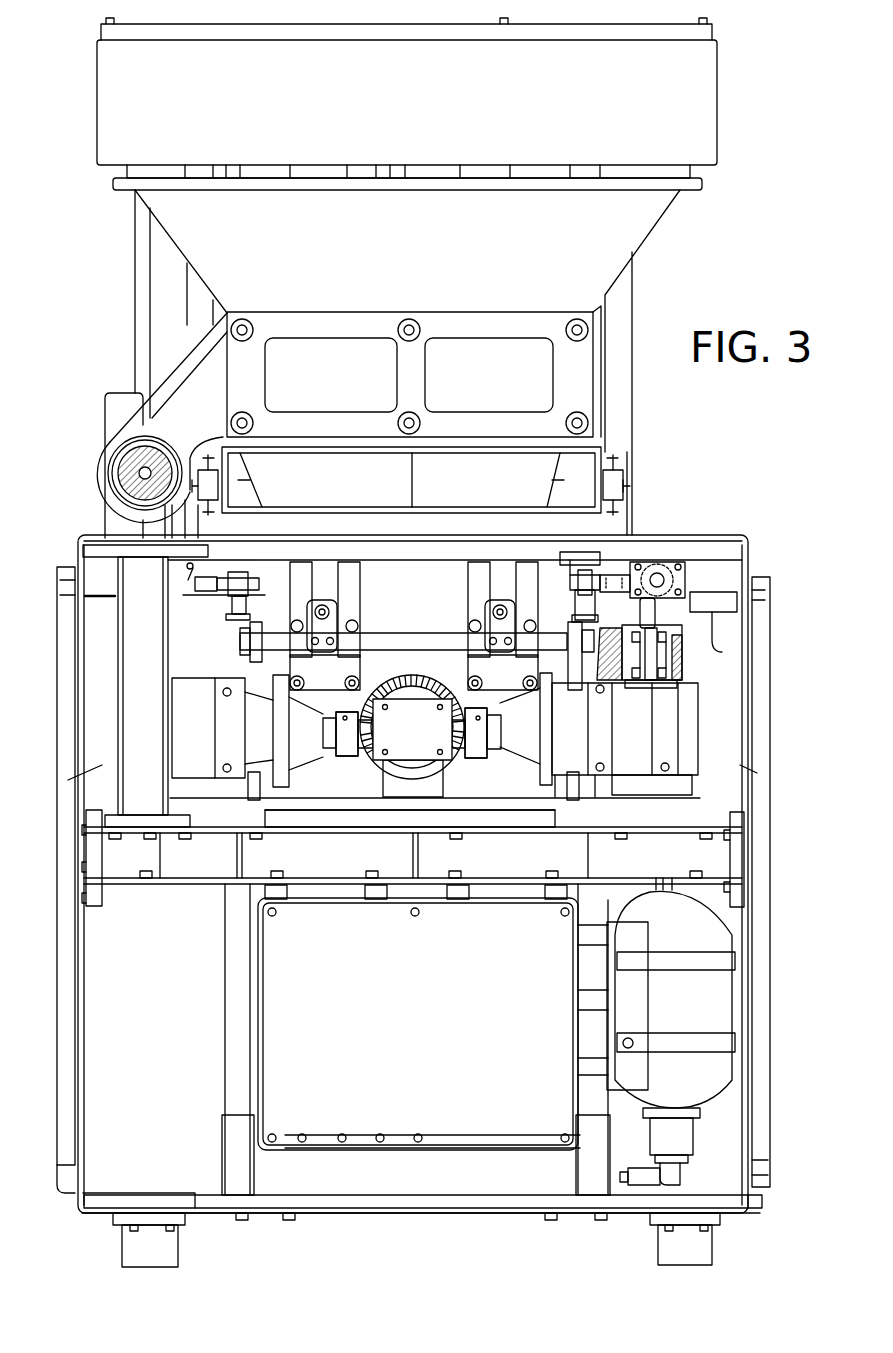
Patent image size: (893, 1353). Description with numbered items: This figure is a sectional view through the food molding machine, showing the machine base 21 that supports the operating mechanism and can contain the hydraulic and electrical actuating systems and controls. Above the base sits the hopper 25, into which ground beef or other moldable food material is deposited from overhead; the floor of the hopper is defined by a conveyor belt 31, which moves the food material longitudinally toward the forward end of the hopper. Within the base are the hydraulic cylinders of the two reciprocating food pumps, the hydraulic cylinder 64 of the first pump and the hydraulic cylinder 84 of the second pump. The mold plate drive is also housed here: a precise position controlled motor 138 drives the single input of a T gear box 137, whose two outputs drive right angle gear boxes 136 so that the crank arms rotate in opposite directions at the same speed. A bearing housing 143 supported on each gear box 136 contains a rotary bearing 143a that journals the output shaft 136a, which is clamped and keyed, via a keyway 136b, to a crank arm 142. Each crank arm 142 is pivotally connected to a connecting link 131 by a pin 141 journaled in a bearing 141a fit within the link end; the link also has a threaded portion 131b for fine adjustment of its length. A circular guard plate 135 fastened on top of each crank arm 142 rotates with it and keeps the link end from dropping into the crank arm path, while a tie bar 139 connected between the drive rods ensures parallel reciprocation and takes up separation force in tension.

The machine base 21 is at (757, 556).
The hopper 25 is at (636, 255).
The conveyor belt 31 is at (580, 468).
The hydraulic cylinder 64 is at (518, 681).
The hydraulic cylinder 84 is at (340, 679).
The connecting link 131 is at (622, 583).
The threaded portion 131b is at (598, 588).
The circular guard plate 135 is at (97, 592).
The right angle gear box 136 is at (185, 733).
The output shaft 136a is at (655, 672).
The keyway 136b is at (660, 610).
The T gear box 137 is at (437, 698).
The position controlled motor 138 is at (379, 686).
The tie bar 139 is at (348, 754).
The pin 141 is at (598, 604).
The bearing 141a is at (612, 568).
The crank arm 142 is at (572, 583).
The bearing housing 143 is at (696, 663).
The rotary bearing 143a is at (648, 690).